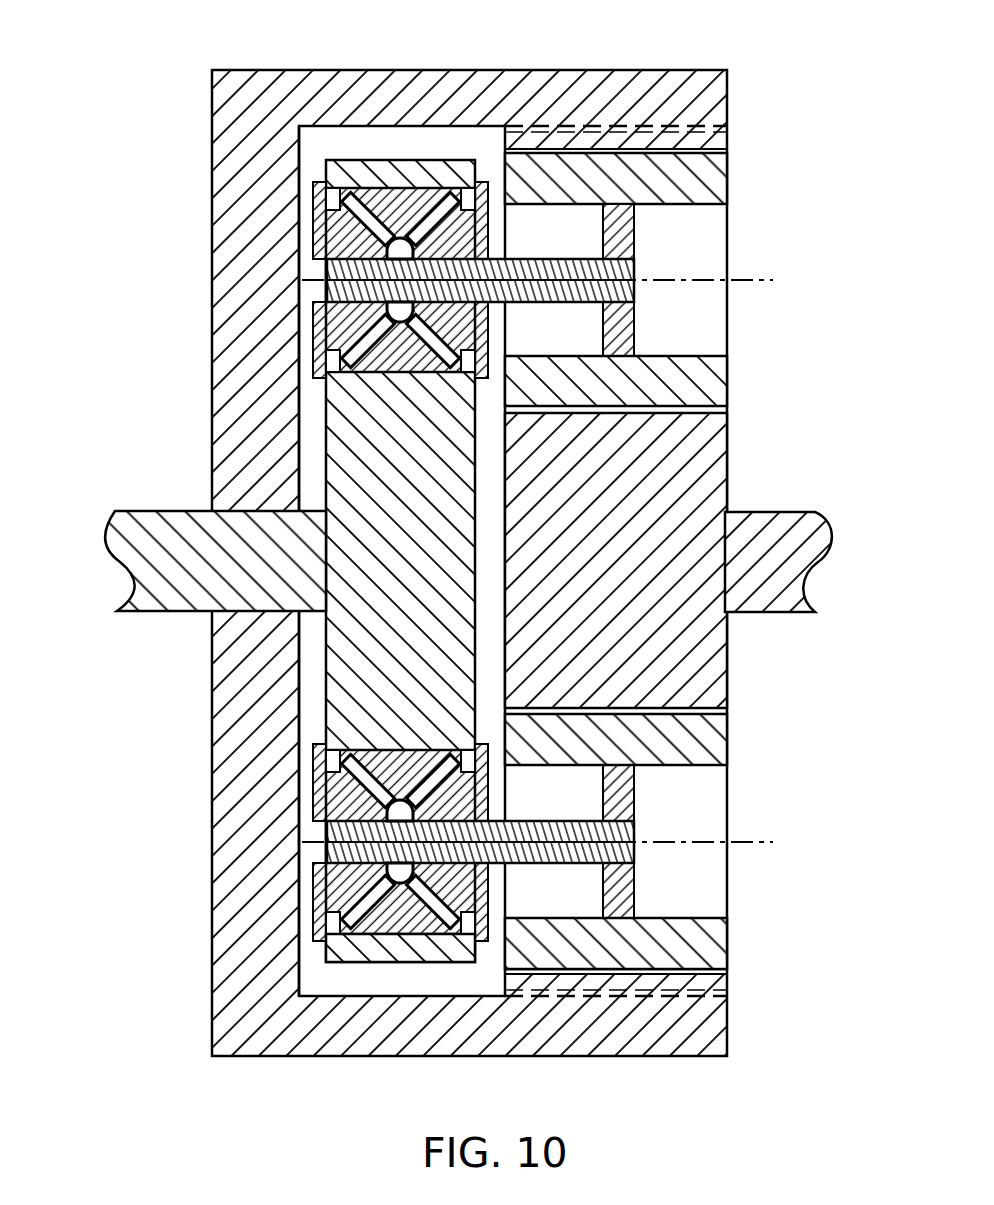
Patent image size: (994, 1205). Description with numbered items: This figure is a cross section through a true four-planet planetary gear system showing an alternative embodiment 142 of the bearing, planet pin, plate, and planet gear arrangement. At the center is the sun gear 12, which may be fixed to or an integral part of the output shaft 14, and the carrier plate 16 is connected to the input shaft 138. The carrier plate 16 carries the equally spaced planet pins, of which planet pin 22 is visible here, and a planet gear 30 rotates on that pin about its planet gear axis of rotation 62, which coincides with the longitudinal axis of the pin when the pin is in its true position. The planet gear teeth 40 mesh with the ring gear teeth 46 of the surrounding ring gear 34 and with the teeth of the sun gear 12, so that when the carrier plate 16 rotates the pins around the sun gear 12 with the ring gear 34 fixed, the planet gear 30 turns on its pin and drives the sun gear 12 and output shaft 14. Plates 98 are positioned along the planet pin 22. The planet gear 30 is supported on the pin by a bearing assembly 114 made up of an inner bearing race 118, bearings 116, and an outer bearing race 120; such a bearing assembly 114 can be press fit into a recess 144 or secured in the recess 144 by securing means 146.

The ring gear 34 is at (480, 70).
The carrier plate 16 is at (322, 398).
The input shaft 138 is at (130, 511).
The output shaft 14 is at (785, 511).
The sun gear 12 is at (717, 659).
The planet gear 30 is at (717, 743).
The plate 98 is at (623, 790).
The planet pin 22 is at (623, 834).
The planet gear axis of rotation 62 is at (758, 842).
The embodiment 142 is at (750, 914).
The planet gear teeth 40 is at (720, 973).
The ring gear teeth 46 is at (720, 985).
The outer bearing race 120 is at (348, 748).
The bearing 116 is at (333, 762).
The securing means 146 is at (338, 812).
The inner bearing race 118 is at (325, 822).
The recess 144 is at (303, 902).
The bearing assembly 114 is at (362, 941).